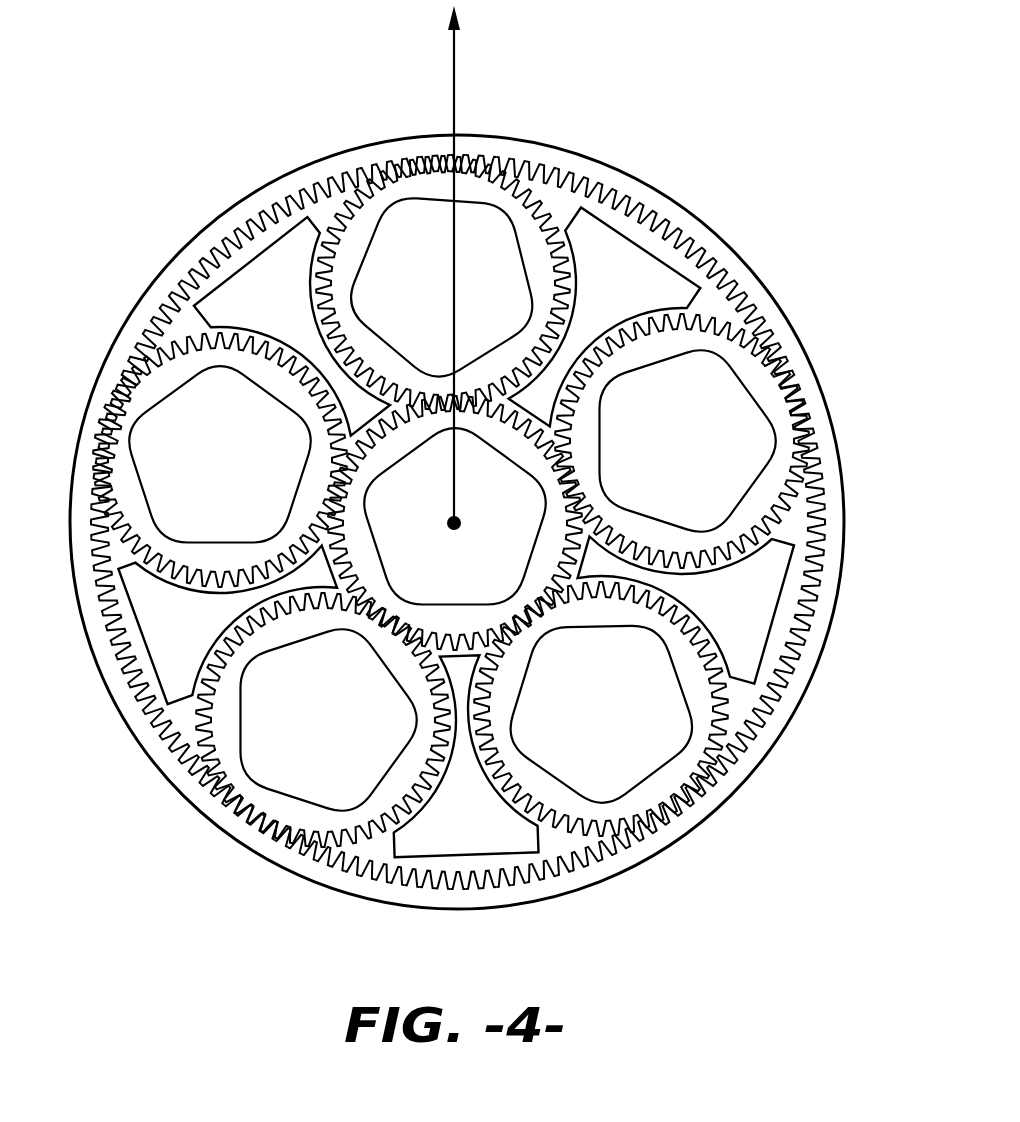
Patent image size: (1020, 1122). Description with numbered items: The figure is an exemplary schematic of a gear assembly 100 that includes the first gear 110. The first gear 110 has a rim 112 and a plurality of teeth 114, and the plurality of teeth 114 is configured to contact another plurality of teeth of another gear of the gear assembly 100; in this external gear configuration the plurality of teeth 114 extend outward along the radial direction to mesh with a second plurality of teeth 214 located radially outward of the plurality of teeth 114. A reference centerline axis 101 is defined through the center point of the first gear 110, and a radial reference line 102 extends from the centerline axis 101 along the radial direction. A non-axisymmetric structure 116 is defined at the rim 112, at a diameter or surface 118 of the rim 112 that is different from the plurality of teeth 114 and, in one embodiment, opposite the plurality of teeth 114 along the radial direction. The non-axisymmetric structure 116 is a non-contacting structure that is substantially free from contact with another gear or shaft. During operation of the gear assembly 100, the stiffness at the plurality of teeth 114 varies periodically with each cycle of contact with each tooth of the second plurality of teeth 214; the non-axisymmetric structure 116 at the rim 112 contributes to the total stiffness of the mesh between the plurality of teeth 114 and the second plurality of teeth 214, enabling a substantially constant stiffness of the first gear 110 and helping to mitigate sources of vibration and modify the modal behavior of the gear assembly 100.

The gear assembly 100 is at (718, 144).
The reference centerline axis 101 is at (460, 520).
The radial reference line 102 is at (457, 77).
The first gear 110 is at (638, 788).
The rim 112 is at (512, 178).
The plurality of teeth 114 is at (565, 852).
The non-axisymmetric structure 116 is at (313, 655).
The surface of the rim 118 is at (212, 669).
The second plurality of teeth 214 is at (500, 650).